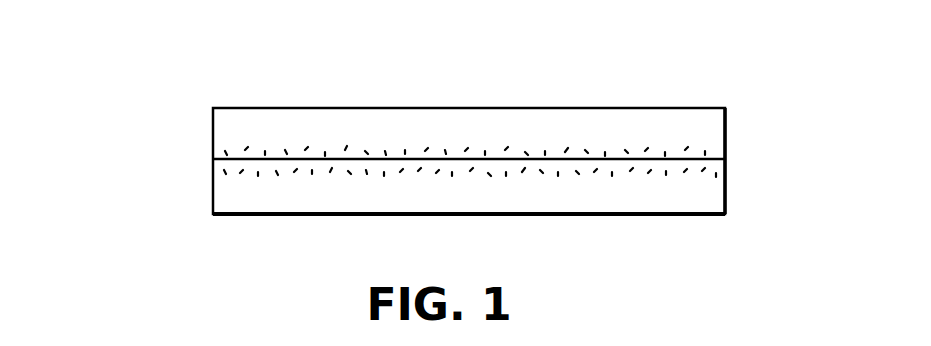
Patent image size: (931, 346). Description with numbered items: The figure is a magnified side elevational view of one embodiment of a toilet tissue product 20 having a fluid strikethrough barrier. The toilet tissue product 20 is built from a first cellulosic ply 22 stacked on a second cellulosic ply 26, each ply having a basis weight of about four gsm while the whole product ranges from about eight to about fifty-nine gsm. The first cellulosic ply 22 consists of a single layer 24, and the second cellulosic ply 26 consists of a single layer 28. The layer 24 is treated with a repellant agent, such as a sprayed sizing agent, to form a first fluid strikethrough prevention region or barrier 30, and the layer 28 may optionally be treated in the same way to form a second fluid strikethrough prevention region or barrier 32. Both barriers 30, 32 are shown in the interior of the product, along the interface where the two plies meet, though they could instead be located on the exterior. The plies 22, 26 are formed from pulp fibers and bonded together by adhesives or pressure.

The toilet tissue product 20 is at (172, 162).
The first cellulosic ply 22 is at (748, 102).
The layer 24 is at (712, 139).
The second cellulosic ply 26 is at (745, 213).
The layer 28 is at (228, 191).
The first fluid strikethrough prevention region or barrier 30 is at (236, 151).
The second fluid strikethrough prevention region or barrier 32 is at (395, 180).